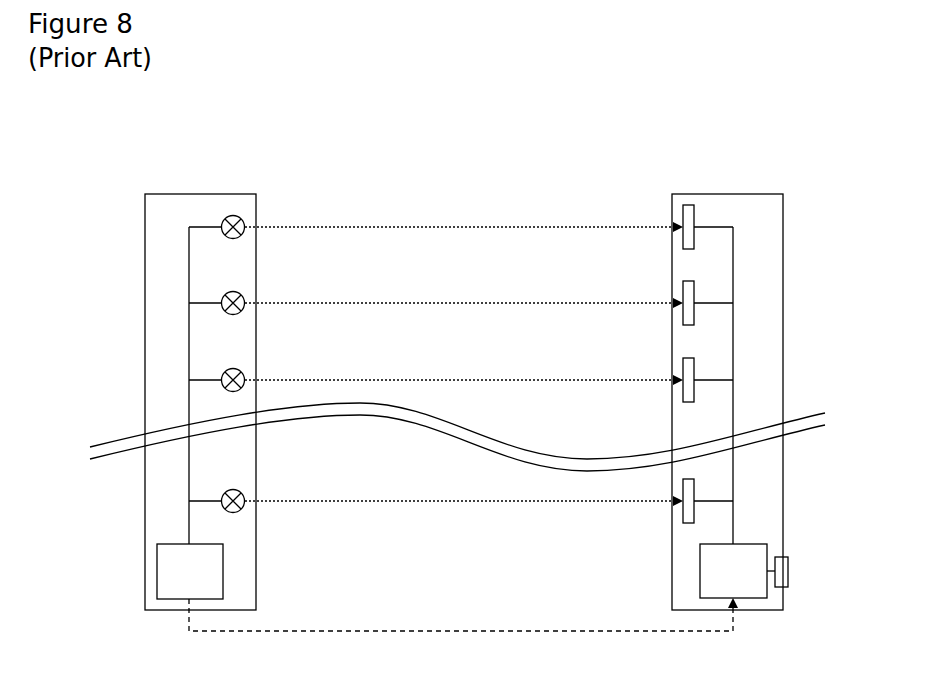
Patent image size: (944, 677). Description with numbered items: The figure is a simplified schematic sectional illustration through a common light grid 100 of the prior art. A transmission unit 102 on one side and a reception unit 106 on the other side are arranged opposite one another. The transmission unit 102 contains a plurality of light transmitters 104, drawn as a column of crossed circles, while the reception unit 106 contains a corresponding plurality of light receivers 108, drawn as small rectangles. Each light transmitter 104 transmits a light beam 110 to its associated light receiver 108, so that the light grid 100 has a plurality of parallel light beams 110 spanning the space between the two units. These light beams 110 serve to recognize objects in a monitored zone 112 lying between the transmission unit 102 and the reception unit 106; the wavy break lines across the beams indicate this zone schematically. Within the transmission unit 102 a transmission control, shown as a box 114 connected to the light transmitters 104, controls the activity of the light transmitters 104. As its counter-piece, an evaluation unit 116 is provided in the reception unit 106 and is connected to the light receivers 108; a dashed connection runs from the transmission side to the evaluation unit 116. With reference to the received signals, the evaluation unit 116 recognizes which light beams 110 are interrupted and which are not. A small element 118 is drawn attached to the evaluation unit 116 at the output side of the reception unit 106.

The light grid 100 is at (503, 150).
The transmission unit 102 is at (157, 227).
The light transmitter 104 is at (237, 219).
The reception unit 106 is at (772, 226).
The light receiver 108 is at (681, 226).
The light beam 110 is at (486, 226).
The monitored zone 112 is at (413, 528).
The emitter controller 114 is at (167, 566).
The evaluation unit 116 is at (752, 558).
The output switch 118 is at (786, 573).